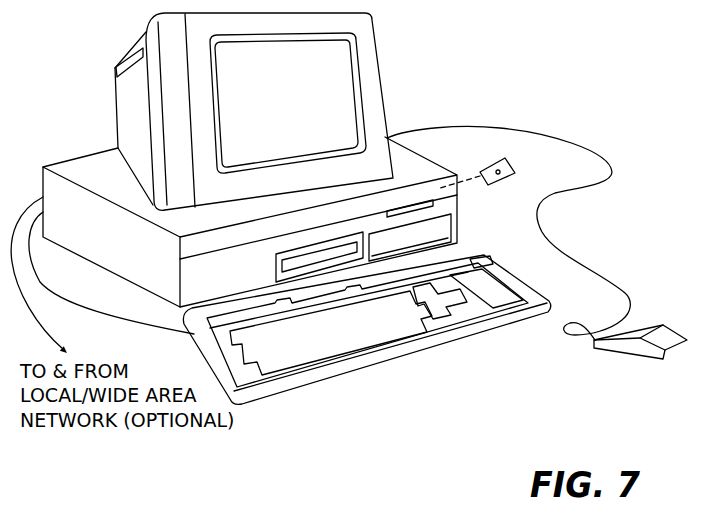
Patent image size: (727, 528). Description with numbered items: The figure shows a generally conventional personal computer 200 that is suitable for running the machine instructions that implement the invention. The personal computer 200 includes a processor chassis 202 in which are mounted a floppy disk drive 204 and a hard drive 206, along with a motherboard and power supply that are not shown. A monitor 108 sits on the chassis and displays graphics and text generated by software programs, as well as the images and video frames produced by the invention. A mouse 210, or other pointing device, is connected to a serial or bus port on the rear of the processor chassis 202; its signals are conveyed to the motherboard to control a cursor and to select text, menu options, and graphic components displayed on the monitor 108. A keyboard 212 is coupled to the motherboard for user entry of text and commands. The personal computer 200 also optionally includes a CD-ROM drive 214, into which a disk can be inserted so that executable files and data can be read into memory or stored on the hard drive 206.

The monitor 108 is at (380, 66).
The personal computer 200 is at (370, 377).
The processor chassis 202 is at (458, 189).
The floppy disk drive 204 is at (424, 199).
The hard drive 206 is at (430, 229).
The mouse 210 is at (663, 358).
The keyboard 212 is at (447, 343).
The compact disk-read only memory (CD-ROM) drive 214 is at (276, 271).